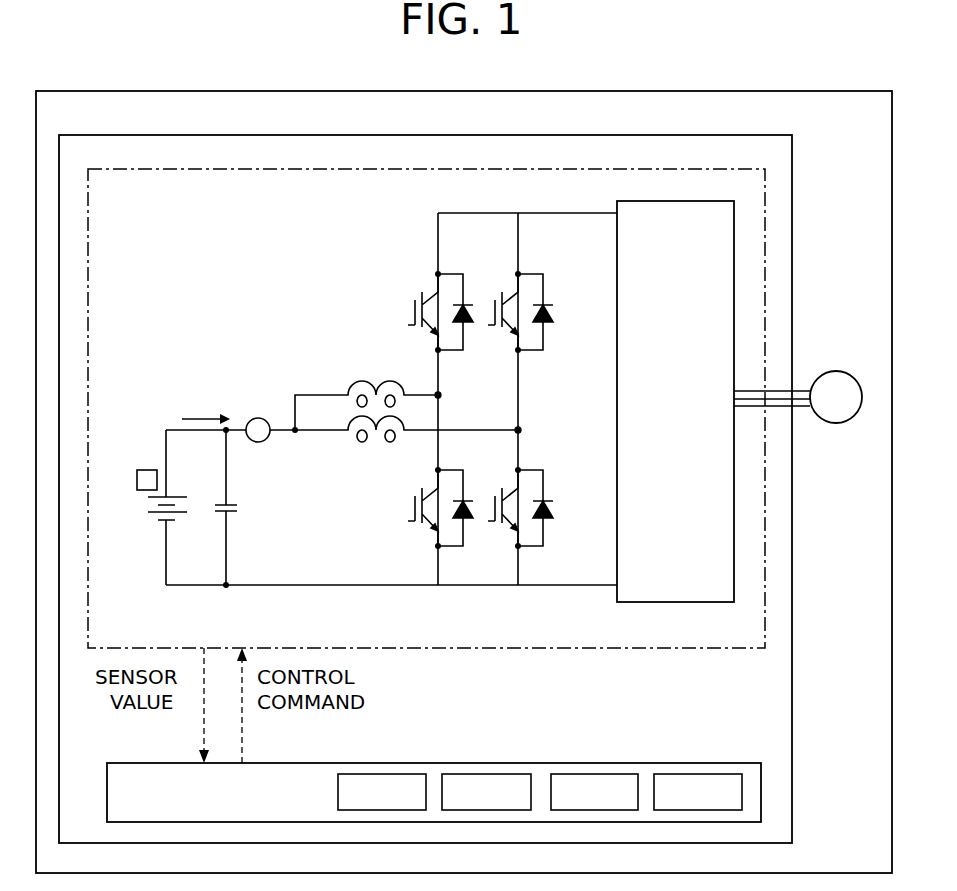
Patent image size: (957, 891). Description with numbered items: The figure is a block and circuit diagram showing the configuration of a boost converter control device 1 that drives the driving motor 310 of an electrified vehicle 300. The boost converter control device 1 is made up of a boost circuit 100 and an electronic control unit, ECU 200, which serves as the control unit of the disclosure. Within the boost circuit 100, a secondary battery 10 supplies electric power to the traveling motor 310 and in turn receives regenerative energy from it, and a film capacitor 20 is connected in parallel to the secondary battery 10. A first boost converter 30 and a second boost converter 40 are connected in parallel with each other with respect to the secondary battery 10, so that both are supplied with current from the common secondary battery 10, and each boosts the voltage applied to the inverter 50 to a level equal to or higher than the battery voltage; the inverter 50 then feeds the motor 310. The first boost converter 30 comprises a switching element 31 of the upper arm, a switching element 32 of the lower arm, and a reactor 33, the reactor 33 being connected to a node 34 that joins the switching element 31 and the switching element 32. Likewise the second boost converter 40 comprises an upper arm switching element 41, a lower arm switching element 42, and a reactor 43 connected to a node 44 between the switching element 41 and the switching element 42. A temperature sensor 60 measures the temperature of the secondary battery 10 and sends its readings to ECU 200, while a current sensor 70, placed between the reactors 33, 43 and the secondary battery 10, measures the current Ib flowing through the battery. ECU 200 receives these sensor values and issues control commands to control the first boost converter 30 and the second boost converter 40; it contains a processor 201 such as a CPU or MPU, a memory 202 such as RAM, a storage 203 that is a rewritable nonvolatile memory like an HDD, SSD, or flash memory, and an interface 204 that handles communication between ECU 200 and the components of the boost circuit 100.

The electrified vehicle 300 is at (764, 89).
The boost converter control device 1 is at (722, 135).
The boost circuit 100 is at (662, 168).
The inverter 50 is at (683, 201).
The driving motor 310 is at (815, 372).
The secondary battery 10 is at (172, 508).
The film capacitor 20 is at (230, 508).
The temperature sensor 60 is at (142, 470).
The current sensor 70 is at (254, 418).
The first boost converter 30 is at (384, 408).
The switching element of the upper arm 31 is at (412, 312).
The switching element of the lower arm 32 is at (408, 521).
The reactor 33 is at (375, 386).
The node 34 is at (432, 390).
The second boost converter 40 is at (411, 409).
The switching element of the upper arm 41 is at (492, 312).
The switching element of the lower arm 42 is at (488, 521).
The reactor 43 is at (381, 444).
The node 44 is at (514, 420).
The electronic control unit 200 is at (258, 763).
The processor 201 is at (382, 774).
The memory 202 is at (488, 774).
The storage 203 is at (596, 774).
The interface 204 is at (702, 774).